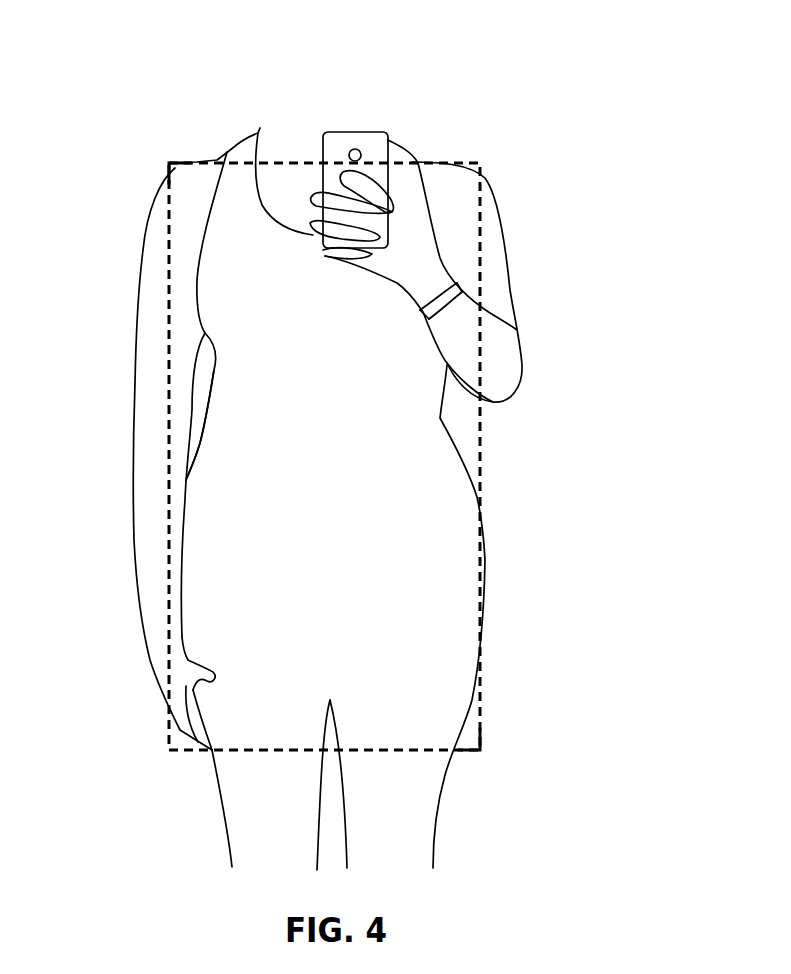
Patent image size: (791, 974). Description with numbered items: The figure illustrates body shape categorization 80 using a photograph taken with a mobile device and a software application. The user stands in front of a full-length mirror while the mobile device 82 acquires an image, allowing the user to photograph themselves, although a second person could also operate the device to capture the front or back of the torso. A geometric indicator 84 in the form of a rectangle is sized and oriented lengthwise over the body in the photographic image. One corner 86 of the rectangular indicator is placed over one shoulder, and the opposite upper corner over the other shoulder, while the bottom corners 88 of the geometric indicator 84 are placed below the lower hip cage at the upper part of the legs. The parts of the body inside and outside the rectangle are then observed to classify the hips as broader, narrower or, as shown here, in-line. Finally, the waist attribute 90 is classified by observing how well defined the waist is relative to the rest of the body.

The body shape categorization 80 is at (613, 64).
The mobile device 82 is at (340, 132).
The geometric indicator 84 is at (484, 478).
The corner 86 is at (168, 163).
The bottom corners 88 is at (482, 751).
The waist attribute 90 is at (201, 441).